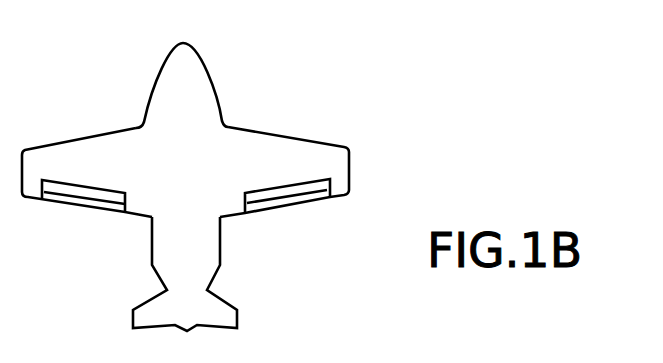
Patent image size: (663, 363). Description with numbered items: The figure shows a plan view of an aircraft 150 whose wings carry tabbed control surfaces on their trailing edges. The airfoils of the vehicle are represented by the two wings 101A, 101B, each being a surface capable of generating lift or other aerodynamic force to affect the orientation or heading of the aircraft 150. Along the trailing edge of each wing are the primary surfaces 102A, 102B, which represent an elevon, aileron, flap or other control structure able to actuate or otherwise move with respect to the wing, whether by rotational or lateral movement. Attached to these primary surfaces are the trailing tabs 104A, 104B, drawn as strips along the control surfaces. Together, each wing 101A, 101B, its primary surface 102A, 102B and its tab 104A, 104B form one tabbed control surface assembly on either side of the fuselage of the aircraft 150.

The aircraft 150 is at (175, 176).
The wing 101A is at (87, 153).
The wing 101B is at (265, 145).
The primary surface 102A is at (86, 199).
The primary surface 102B is at (270, 202).
The trailing tab 104A is at (65, 202).
The trailing tab 104B is at (285, 205).